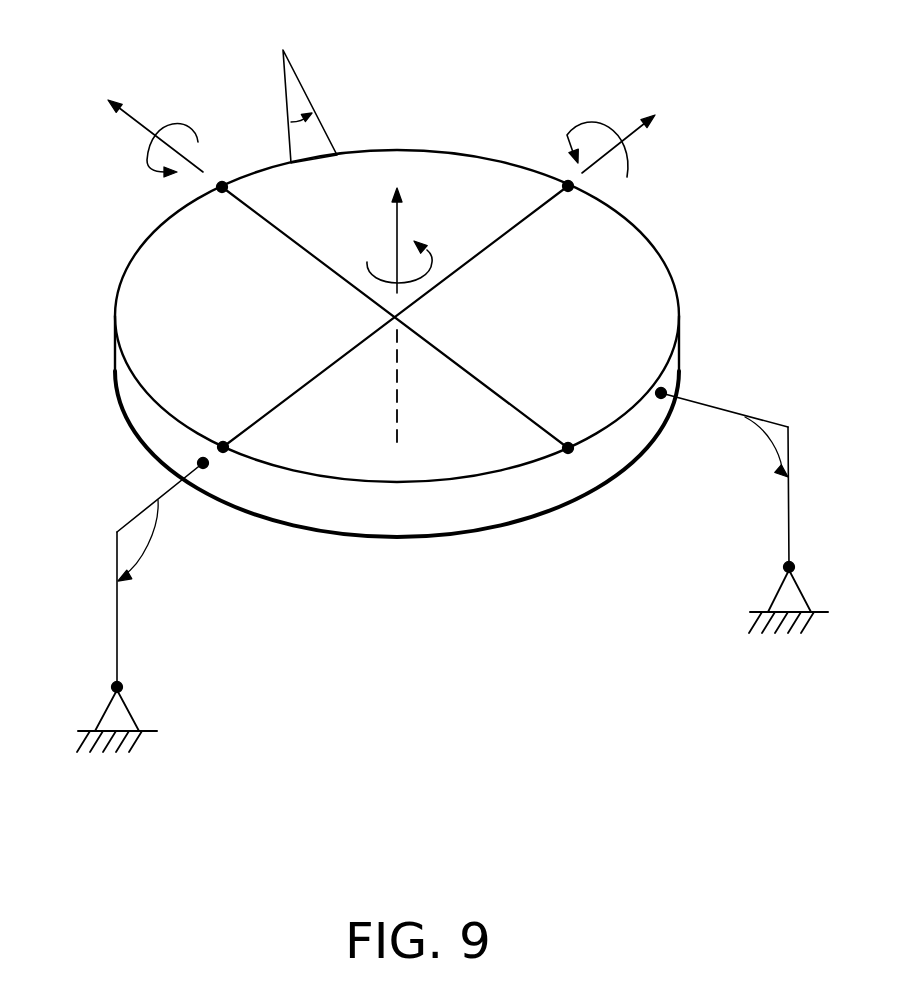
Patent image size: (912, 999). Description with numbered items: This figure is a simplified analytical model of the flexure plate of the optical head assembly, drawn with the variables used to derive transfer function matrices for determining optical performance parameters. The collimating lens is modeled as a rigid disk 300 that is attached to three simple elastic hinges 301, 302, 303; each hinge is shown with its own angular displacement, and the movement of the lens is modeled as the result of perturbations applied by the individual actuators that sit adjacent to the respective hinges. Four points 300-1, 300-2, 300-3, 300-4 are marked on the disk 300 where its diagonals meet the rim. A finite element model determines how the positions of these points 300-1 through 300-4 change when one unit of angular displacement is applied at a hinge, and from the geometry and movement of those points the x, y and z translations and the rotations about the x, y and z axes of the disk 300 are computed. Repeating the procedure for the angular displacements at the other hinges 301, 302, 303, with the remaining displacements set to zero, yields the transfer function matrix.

The rigid disk 300 is at (468, 178).
The point on the disk 300-1 is at (229, 422).
The point on the disk 300-2 is at (556, 472).
The point on the disk 300-3 is at (555, 208).
The point on the disk 300-4 is at (250, 189).
The elastic hinge 301 is at (101, 510).
The elastic hinge 302 is at (795, 405).
The elastic hinge 303 is at (310, 50).